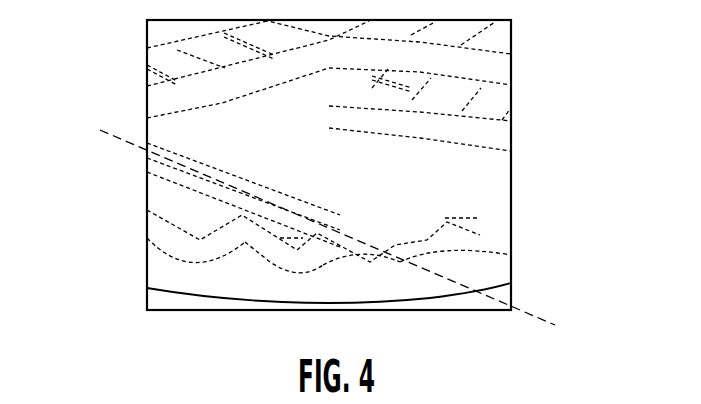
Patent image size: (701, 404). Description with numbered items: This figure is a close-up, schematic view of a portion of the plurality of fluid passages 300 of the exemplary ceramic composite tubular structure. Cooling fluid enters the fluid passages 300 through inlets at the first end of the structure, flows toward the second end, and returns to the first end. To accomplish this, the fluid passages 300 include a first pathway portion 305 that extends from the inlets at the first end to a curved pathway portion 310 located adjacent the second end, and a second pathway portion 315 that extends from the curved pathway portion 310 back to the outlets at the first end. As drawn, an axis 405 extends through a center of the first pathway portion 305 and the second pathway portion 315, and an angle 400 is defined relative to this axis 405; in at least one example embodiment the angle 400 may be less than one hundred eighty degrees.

The fluid passages 300 is at (325, 192).
The first pathway portion 305 is at (153, 150).
The curved pathway portion 310 is at (197, 262).
The second pathway portion 315 is at (443, 217).
The angle 400 is at (440, 243).
The axis 405 is at (338, 232).